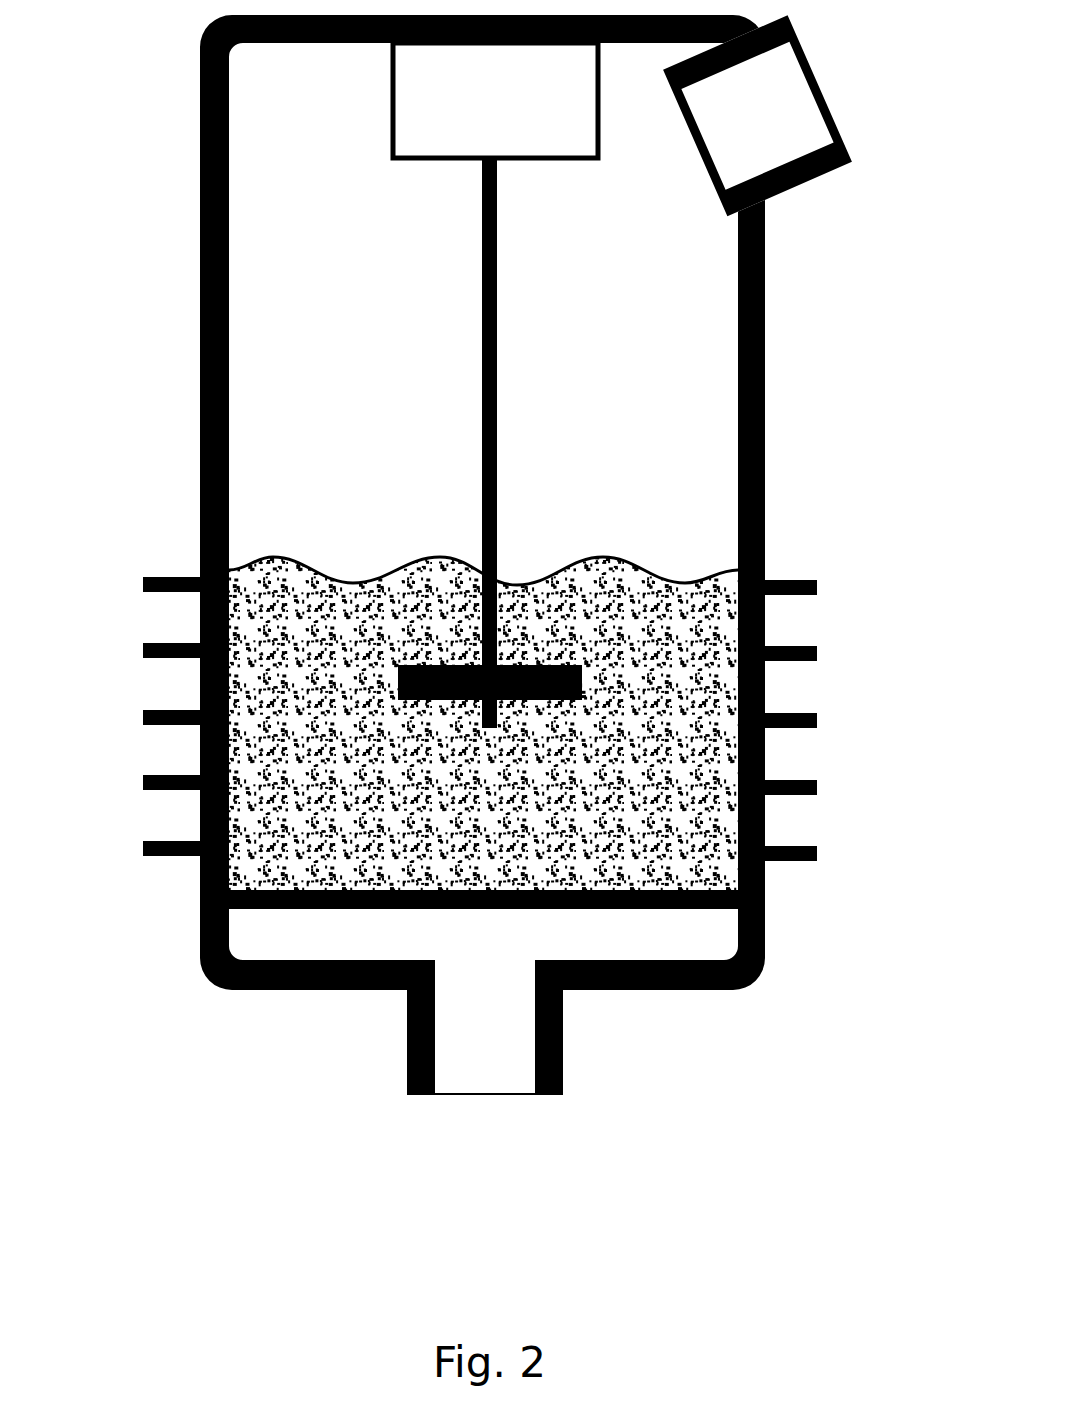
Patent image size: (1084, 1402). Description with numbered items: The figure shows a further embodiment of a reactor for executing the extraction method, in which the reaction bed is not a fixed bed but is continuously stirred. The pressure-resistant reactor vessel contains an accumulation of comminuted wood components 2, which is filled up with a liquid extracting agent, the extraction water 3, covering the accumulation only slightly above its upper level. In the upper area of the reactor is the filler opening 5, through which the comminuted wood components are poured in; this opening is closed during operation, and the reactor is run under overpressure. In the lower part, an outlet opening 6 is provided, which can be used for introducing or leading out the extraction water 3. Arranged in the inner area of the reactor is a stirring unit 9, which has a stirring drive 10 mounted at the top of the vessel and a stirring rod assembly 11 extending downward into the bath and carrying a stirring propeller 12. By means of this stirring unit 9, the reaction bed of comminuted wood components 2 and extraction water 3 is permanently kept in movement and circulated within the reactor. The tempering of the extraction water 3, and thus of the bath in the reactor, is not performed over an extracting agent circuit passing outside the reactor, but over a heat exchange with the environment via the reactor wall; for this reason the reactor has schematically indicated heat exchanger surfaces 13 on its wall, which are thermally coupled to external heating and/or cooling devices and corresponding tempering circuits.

The comminuted wood components 2 is at (349, 592).
The extraction water 3 is at (423, 560).
The filler opening 5 is at (762, 105).
The outlet opening 6 is at (483, 1033).
The stirring unit 9 is at (430, 332).
The stirring drive 10 is at (495, 100).
The stirring rod assembly 11 is at (497, 345).
The stirring propeller 12 is at (553, 663).
The heat exchanger surfaces 13 is at (152, 575).